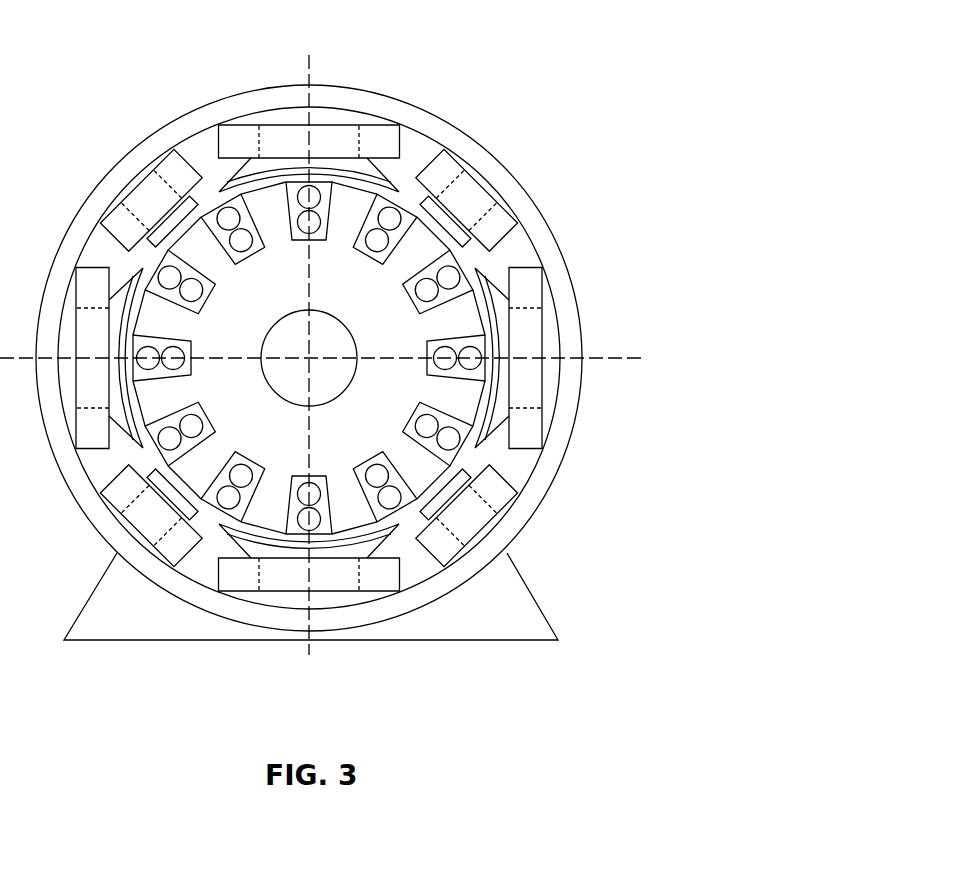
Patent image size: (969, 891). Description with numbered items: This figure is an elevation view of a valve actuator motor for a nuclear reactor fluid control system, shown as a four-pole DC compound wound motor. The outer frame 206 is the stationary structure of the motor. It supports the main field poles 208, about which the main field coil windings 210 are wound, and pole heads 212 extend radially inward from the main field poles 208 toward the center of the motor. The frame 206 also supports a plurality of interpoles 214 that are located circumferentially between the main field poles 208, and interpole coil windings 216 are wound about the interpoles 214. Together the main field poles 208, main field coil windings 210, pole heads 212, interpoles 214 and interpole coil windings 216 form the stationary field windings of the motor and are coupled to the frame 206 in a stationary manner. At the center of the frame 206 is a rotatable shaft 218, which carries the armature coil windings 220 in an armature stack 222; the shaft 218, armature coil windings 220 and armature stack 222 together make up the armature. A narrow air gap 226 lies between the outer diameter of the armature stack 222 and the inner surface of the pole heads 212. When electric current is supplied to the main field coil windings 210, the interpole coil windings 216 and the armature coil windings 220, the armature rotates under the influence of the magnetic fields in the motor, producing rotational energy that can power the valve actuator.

The frame 206 is at (520, 533).
The main field poles 208 is at (333, 118).
The main field coil windings 210 is at (386, 141).
The pole heads 212 is at (366, 174).
The interpoles 214 is at (486, 193).
The interpole coil windings 216 is at (490, 229).
The rotatable shaft 218 is at (344, 379).
The armature coil windings 220 is at (458, 447).
The armature stack 222 is at (408, 386).
The air gap 226 is at (480, 299).